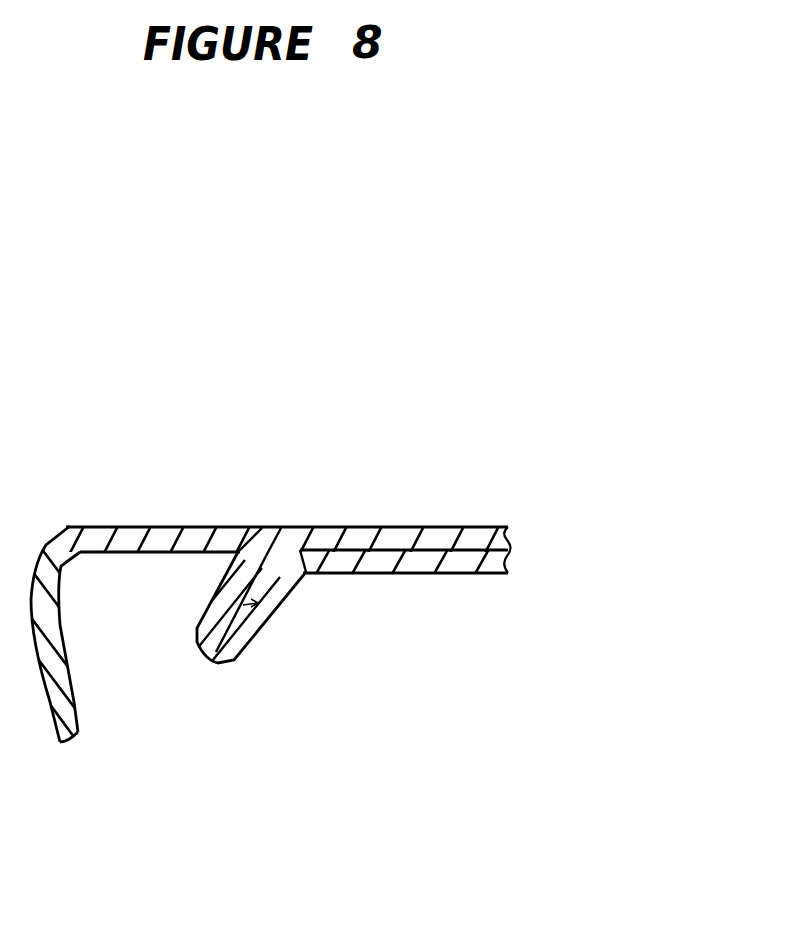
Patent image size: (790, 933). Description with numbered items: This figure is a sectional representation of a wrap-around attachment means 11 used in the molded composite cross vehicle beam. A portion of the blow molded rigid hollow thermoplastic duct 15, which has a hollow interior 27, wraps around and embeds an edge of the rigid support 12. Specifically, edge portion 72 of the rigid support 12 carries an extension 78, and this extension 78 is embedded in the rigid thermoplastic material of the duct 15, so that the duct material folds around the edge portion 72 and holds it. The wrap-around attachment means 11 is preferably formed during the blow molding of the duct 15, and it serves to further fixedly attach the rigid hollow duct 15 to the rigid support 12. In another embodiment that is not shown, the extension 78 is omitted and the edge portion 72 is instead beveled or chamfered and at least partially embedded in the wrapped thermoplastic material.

The wrap-around attachment means 11 is at (223, 818).
The rigid support 12 is at (400, 538).
The rigid hollow thermoplastic duct 15 is at (157, 527).
The edge portion 72 is at (295, 527).
The extension 78 is at (273, 620).
The hollow interior 27 is at (394, 729).